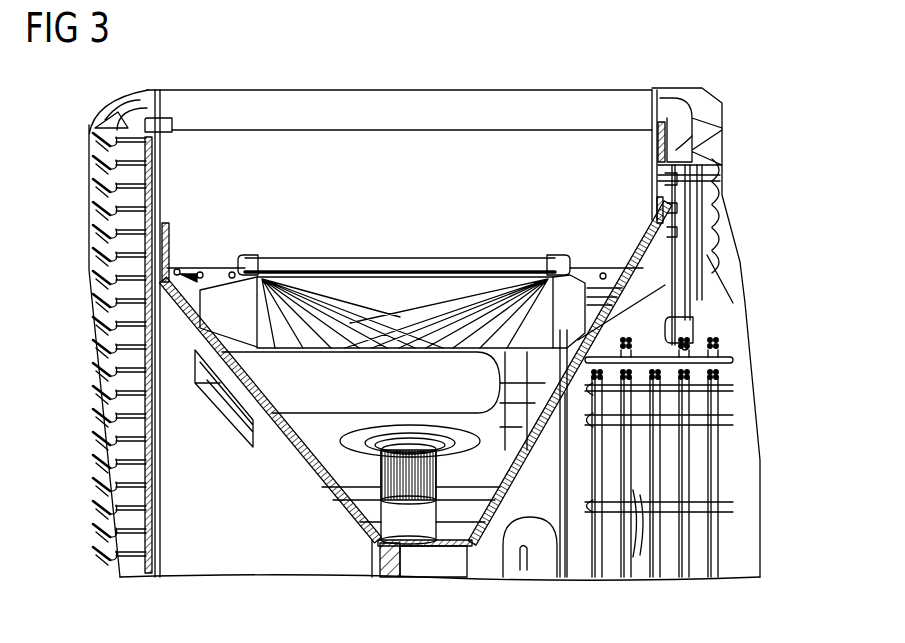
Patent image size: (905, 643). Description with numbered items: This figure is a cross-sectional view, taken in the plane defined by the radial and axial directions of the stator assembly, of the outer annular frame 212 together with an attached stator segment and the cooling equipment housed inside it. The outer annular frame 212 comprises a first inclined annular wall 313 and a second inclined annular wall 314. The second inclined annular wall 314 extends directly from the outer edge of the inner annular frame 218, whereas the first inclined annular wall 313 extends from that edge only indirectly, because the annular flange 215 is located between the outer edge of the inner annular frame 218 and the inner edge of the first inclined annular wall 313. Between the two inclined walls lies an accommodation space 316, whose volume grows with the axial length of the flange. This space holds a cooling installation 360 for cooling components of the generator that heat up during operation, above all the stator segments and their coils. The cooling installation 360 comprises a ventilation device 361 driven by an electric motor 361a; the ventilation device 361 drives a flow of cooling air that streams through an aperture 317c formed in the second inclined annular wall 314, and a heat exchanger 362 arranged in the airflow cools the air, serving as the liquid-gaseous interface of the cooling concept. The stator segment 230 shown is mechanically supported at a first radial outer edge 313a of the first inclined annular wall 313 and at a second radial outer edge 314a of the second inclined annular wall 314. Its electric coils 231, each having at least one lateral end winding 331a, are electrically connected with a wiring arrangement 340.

The outer annular frame 212 is at (205, 553).
The annular flange 215 is at (456, 552).
The inner annular frame 218 is at (390, 577).
The stator segment 230 is at (328, 103).
The electric coils 231 is at (93, 117).
The first inclined annular wall 313 is at (518, 463).
The first radial outer edge 313a is at (657, 205).
The second inclined annular wall 314 is at (337, 500).
The second radial outer edge 314a is at (170, 232).
The accommodation space 316 is at (458, 195).
The aperture 317c is at (240, 425).
The lateral end winding 331a is at (680, 146).
The wiring arrangement 340 is at (756, 496).
The cooling installation 360 is at (147, 283).
The ventilation device 361 is at (448, 395).
The electric motor 361a is at (365, 527).
The heat exchanger 362 is at (327, 258).